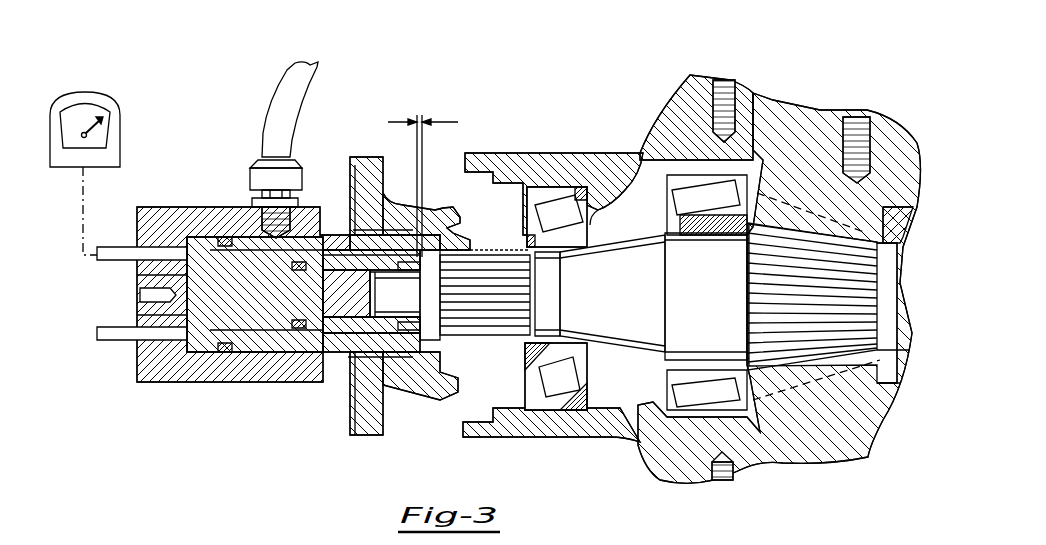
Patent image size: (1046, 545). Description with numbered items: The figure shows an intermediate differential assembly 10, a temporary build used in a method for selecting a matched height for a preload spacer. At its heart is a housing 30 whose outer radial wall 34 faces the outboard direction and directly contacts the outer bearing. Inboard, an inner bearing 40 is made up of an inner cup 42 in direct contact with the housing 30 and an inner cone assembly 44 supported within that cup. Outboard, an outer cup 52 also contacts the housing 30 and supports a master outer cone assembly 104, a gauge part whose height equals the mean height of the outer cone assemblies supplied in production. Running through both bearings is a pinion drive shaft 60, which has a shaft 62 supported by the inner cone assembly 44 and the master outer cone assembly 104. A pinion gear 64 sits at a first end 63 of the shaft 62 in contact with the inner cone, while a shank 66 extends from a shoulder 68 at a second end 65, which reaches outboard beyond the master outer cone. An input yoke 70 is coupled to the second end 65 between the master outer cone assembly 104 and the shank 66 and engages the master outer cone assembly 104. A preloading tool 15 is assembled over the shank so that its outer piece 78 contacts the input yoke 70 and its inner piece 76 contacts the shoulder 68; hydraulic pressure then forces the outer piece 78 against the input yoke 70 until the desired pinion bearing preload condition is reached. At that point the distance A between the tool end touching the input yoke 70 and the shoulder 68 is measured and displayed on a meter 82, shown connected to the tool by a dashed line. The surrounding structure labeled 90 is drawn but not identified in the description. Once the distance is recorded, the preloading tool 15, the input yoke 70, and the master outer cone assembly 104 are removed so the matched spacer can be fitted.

The intermediate differential assembly 10 is at (506, 77).
The preloading tool 15 is at (337, 233).
The housing 30 is at (535, 152).
The outer radial wall 34 is at (605, 185).
The inner bearing 40 is at (648, 205).
The inner cup 42 is at (668, 185).
The inner cone assembly 44 is at (655, 235).
The outer cup 52 is at (600, 400).
The pinion drive shaft 60 is at (630, 372).
The shaft 62 is at (615, 240).
The first end 63 is at (882, 302).
The pinion gear 64 is at (845, 365).
The second end 65 is at (370, 293).
The shank 66 is at (408, 330).
The shoulder 68 is at (432, 338).
The input yoke 70 is at (390, 152).
The inner piece 76 is at (262, 350).
The outer piece 78 is at (212, 370).
The meter 82 is at (128, 103).
The axle housing 90 is at (780, 175).
The master outer cone assembly 104 is at (585, 352).
The distance A is at (450, 115).